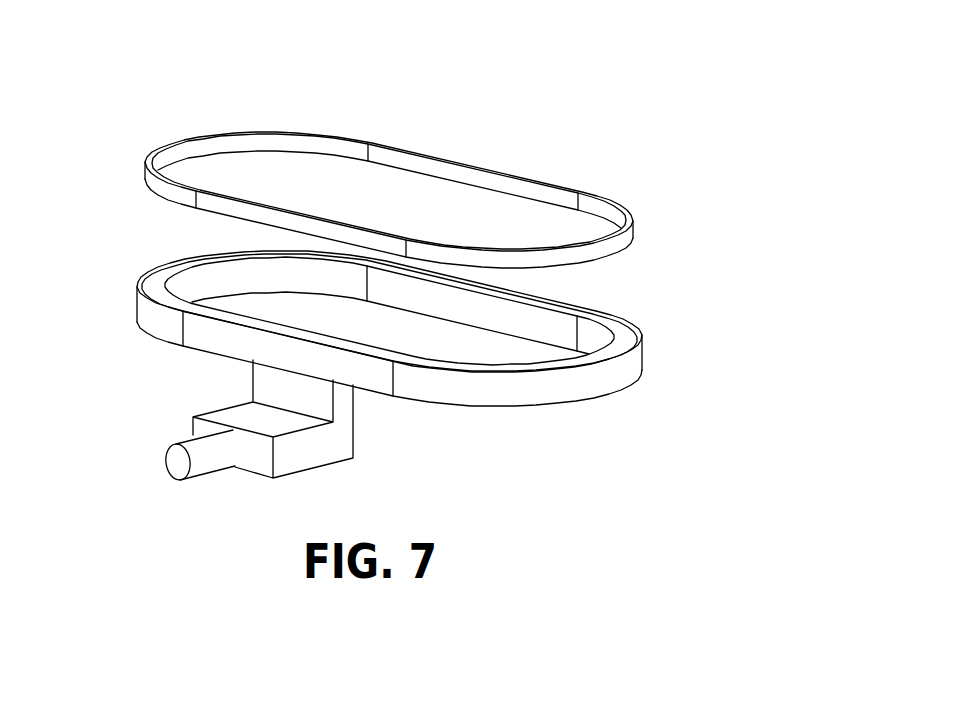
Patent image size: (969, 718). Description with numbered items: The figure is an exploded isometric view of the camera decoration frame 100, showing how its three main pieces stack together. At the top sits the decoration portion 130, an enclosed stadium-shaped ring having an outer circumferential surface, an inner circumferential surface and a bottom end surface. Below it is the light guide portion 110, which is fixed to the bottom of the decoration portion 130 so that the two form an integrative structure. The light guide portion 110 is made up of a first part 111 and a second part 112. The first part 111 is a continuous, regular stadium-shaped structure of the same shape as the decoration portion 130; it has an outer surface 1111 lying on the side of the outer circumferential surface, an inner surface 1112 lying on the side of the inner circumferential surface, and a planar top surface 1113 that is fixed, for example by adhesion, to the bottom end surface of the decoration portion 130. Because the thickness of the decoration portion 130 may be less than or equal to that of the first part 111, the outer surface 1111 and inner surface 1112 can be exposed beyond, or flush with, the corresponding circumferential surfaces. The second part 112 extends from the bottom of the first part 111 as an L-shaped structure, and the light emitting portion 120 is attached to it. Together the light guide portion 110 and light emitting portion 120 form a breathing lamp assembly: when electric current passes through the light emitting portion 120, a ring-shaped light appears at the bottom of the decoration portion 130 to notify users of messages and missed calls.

The camera decoration frame 100 is at (145, 35).
The light guide portion 110 is at (371, 358).
The first part 111 is at (371, 334).
The outer surface 1111 is at (605, 373).
The inner surface 1112 is at (207, 280).
The top surface 1113 is at (157, 291).
The second part 112 is at (337, 442).
The light emitting portion 120 is at (177, 462).
The decoration portion 130 is at (465, 170).